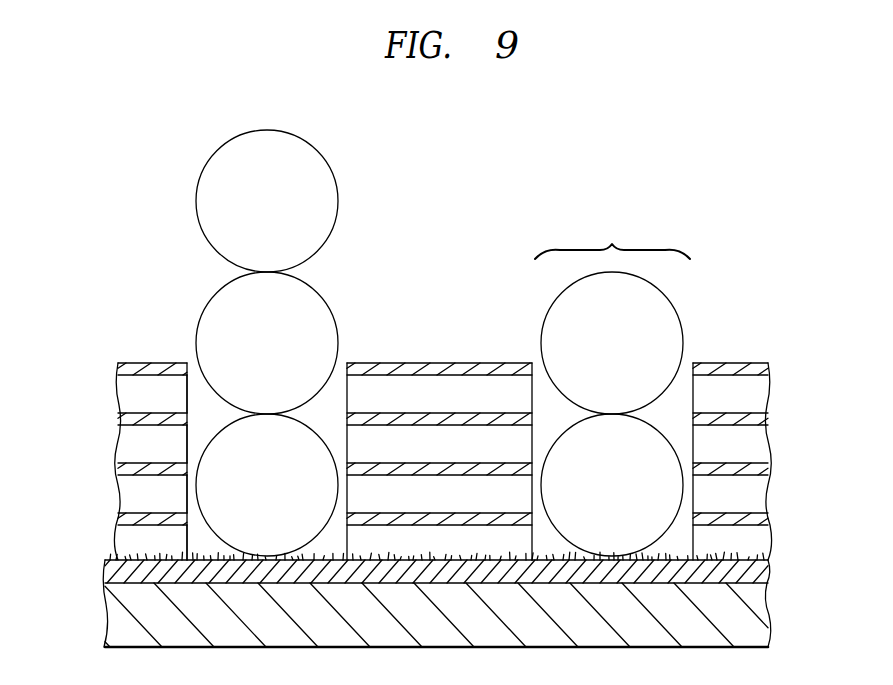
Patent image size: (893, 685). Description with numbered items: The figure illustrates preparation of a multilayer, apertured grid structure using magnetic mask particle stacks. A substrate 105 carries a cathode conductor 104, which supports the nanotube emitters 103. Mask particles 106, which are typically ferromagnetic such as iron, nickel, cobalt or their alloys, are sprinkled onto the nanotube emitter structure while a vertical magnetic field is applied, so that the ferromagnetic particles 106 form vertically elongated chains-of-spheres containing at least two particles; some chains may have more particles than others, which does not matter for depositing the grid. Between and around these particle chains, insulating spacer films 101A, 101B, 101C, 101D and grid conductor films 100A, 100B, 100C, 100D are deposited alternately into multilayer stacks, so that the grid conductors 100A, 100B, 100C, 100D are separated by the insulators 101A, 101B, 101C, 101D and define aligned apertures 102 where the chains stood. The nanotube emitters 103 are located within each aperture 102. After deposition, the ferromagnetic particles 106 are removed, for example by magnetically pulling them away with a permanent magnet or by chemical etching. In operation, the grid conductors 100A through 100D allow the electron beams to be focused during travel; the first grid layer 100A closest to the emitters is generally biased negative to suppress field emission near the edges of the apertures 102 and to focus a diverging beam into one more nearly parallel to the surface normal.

The grid conductor 100A is at (770, 521).
The grid conductor 100B is at (770, 471).
The grid conductor 100C is at (770, 421).
The grid conductor 100D is at (770, 372).
The insulator 101A is at (118, 543).
The insulator 101B is at (118, 494).
The insulator 101C is at (118, 444).
The insulator 101D is at (118, 394).
The aperture 102 is at (612, 235).
The nanotube emitter 103 is at (213, 553).
The cathode conductor 104 is at (770, 572).
The substrate 105 is at (100, 600).
The mask particle 106 is at (334, 312).